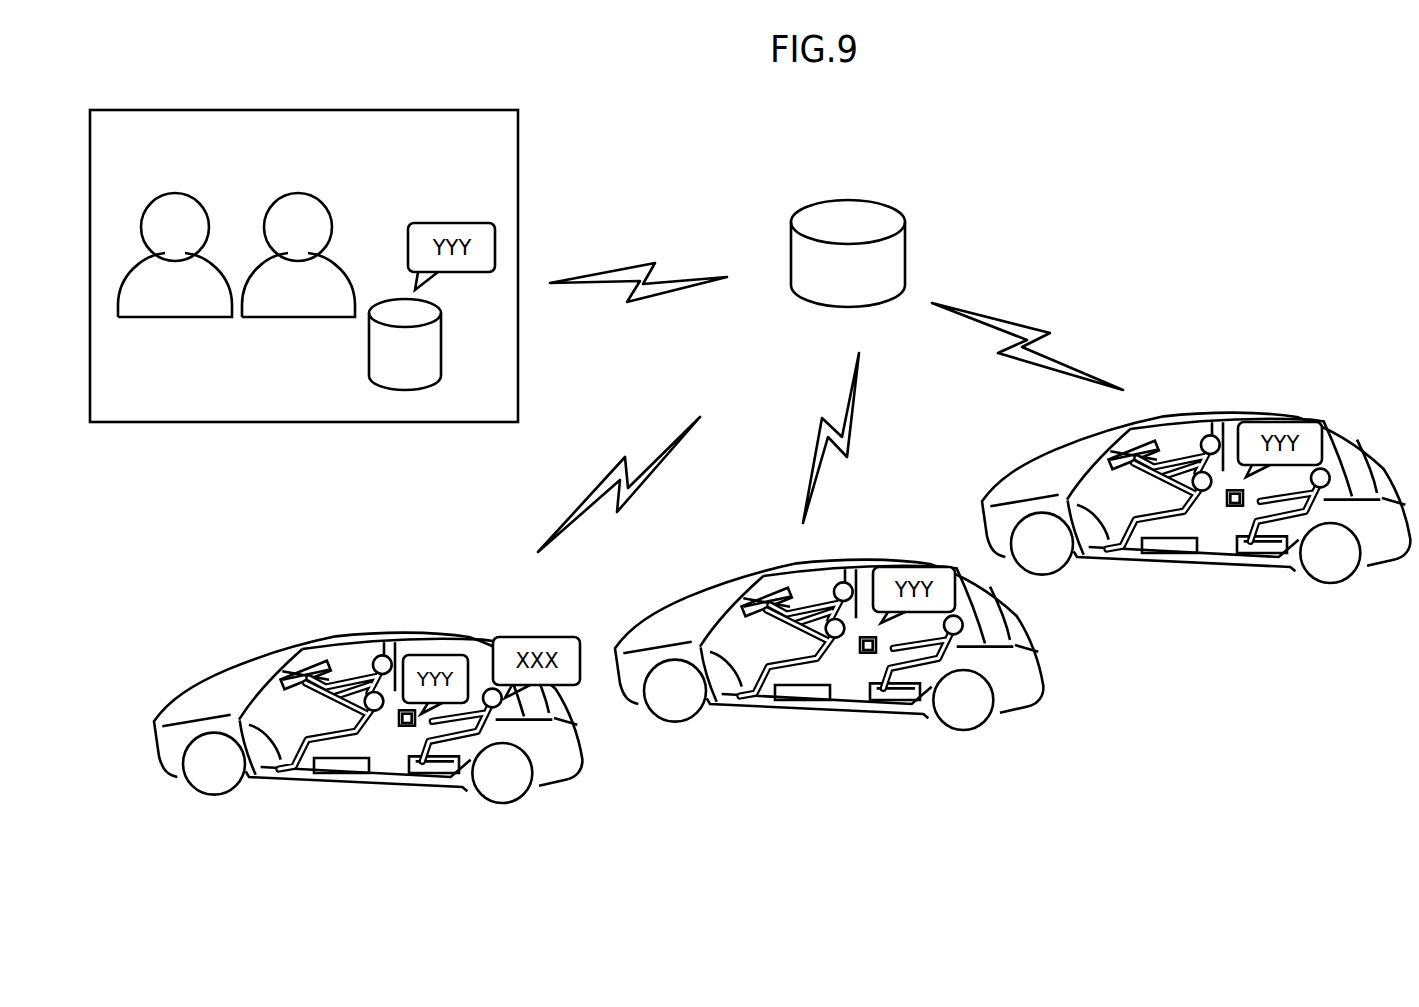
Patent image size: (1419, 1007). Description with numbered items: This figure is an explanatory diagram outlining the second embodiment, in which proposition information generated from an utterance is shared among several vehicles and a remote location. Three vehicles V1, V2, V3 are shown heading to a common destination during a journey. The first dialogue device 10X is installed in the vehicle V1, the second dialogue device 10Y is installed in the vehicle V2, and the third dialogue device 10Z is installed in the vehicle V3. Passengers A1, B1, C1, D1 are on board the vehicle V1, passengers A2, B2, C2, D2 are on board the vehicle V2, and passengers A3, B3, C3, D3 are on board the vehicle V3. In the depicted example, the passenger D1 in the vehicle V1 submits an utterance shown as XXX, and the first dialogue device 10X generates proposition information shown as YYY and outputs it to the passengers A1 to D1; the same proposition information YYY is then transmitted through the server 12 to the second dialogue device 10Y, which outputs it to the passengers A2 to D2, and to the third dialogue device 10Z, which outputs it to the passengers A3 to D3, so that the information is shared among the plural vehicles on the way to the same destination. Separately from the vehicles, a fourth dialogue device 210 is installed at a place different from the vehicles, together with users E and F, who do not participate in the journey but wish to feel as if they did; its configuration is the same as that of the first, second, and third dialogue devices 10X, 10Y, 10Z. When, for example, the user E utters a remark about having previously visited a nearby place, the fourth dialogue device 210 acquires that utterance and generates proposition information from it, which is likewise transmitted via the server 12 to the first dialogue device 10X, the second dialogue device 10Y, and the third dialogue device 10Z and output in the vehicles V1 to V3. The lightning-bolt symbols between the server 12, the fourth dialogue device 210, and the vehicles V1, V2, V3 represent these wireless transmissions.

The vehicle V1 is at (240, 662).
The vehicle V2 is at (704, 592).
The vehicle V3 is at (1048, 452).
The passenger A1 is at (378, 642).
The passenger B1 is at (333, 770).
The passenger C1 is at (490, 650).
The passenger D1 is at (438, 768).
The passenger A2 is at (838, 565).
The passenger B2 is at (793, 703).
The passenger C2 is at (940, 605).
The passenger D2 is at (910, 680).
The passenger A3 is at (1205, 412).
The passenger B3 is at (1160, 560).
The passenger C3 is at (1312, 455).
The passenger D3 is at (1265, 555).
The first dialogue device 10X is at (410, 705).
The second dialogue device 10Y is at (865, 655).
The third dialogue device 10Z is at (1225, 530).
The user E is at (176, 192).
The user F is at (294, 192).
The server 12 is at (850, 200).
The fourth dialogue device 210 is at (441, 343).